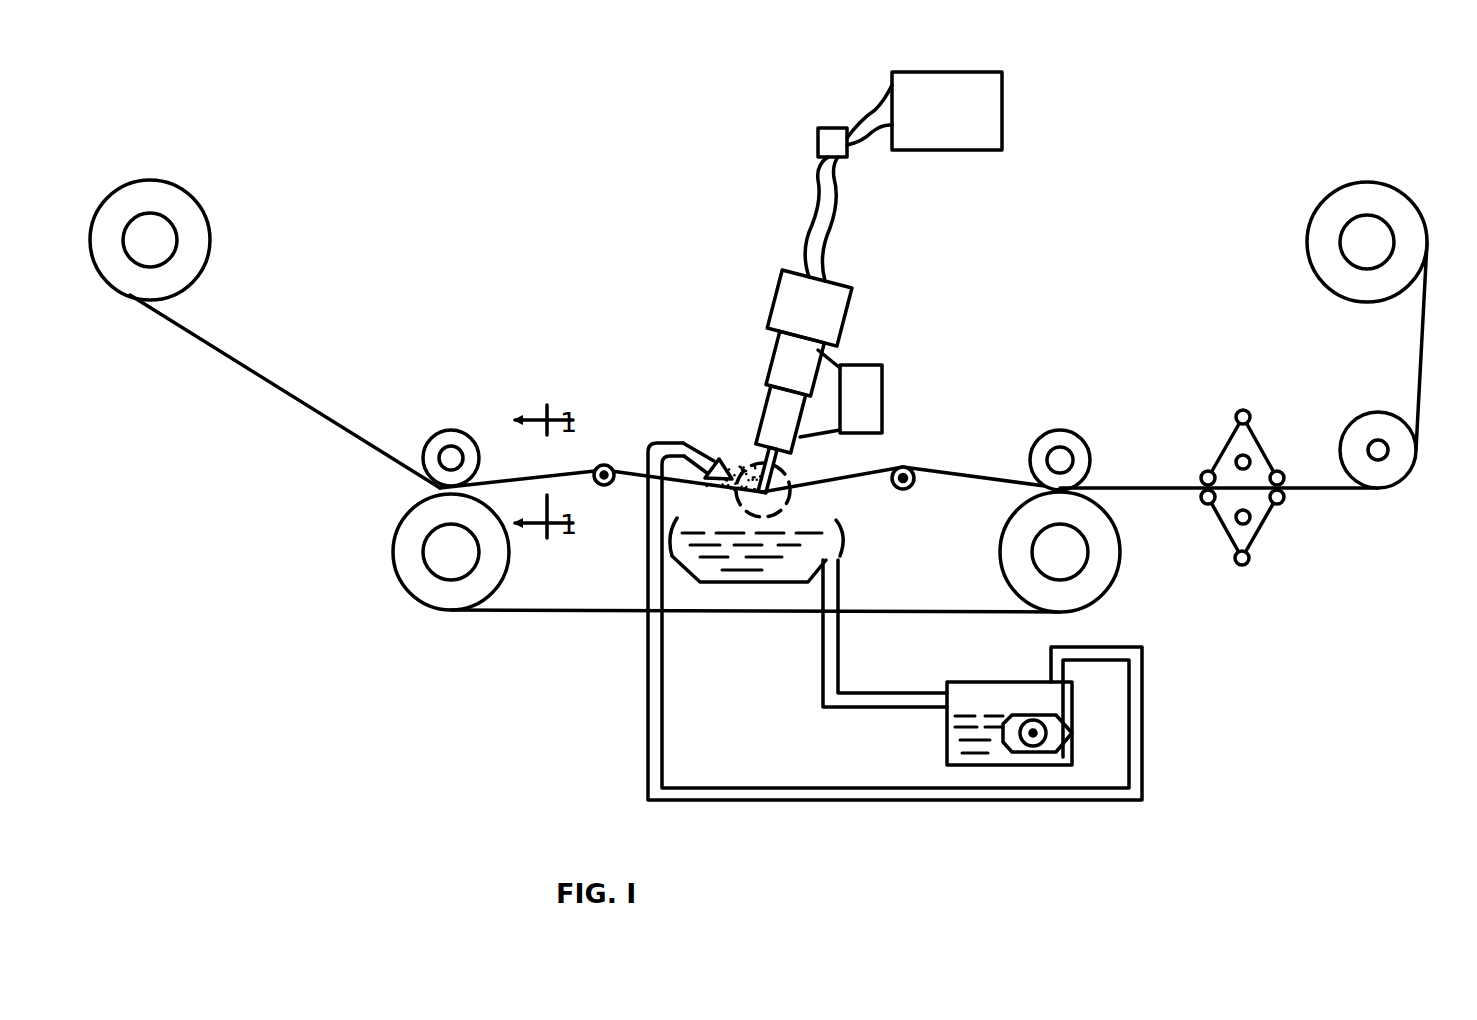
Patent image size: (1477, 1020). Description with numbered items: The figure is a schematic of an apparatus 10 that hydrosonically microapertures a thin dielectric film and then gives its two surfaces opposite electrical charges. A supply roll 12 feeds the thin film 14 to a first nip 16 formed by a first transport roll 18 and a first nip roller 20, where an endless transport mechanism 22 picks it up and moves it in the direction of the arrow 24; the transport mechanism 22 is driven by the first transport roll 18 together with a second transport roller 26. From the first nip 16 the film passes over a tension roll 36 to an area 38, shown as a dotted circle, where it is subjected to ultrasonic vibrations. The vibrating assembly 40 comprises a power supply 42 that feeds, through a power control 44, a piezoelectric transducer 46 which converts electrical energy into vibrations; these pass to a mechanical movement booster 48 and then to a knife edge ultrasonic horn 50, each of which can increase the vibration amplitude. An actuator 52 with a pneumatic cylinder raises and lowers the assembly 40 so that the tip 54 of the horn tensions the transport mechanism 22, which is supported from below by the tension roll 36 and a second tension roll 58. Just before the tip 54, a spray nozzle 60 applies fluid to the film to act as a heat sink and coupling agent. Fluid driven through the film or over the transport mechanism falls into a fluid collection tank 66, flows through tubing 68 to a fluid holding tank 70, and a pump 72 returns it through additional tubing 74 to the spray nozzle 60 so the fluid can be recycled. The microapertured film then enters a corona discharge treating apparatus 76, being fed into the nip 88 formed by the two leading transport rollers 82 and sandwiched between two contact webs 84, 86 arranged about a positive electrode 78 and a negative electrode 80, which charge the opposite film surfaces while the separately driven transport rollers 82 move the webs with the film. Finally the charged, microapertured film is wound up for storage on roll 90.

The apparatus 10 is at (500, 212).
The supply roll 12 is at (205, 203).
The thin dielectric film 14 is at (232, 362).
The first nip 16 is at (405, 442).
The first transport roll 18 is at (395, 548).
The first nip roller 20 is at (462, 430).
The endless transport mechanism 22 is at (512, 618).
The arrow 24 is at (600, 640).
The second transport roller 26 is at (1118, 530).
The tension roll 36 is at (606, 464).
The area 38 is at (800, 496).
The assembly 40 is at (885, 300).
The power supply 42 is at (1003, 100).
The power control 44 is at (818, 140).
The piezoelectric transducer 46 is at (850, 285).
The mechanical movement booster 48 is at (770, 356).
The ultrasonic horn 50 is at (760, 410).
The actuator 52 is at (880, 368).
The tip 54 is at (748, 468).
The second tension roll 58 is at (910, 468).
The spray nozzle 60 is at (712, 456).
The fluid collection tank 66 is at (748, 583).
The tubing 68 is at (846, 652).
The fluid holding tank 70 is at (948, 735).
The pump 72 is at (1062, 733).
The additional tubing 74 is at (828, 805).
The corona discharge treating apparatus 76 is at (1200, 372).
The positive electrode 78 is at (1249, 456).
The negative electrode 80 is at (1250, 518).
The transport rollers 82 is at (1245, 411).
The contact web 84 is at (1265, 450).
The contact web 86 is at (1226, 545).
The nip 88 is at (1200, 482).
The roll 90 is at (1375, 182).